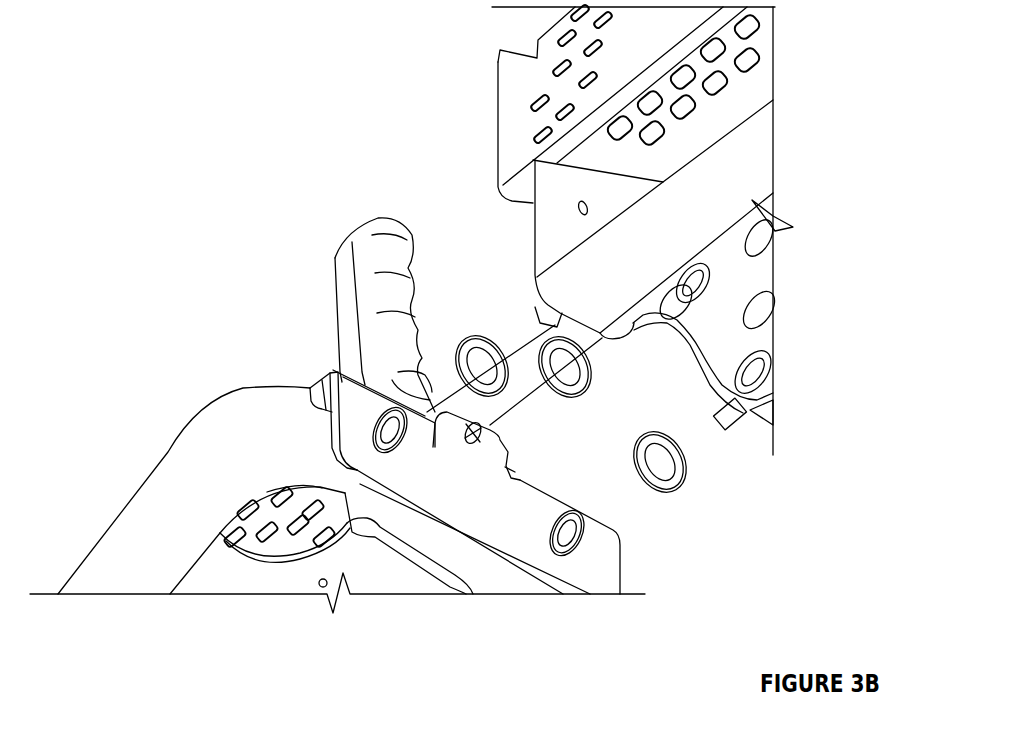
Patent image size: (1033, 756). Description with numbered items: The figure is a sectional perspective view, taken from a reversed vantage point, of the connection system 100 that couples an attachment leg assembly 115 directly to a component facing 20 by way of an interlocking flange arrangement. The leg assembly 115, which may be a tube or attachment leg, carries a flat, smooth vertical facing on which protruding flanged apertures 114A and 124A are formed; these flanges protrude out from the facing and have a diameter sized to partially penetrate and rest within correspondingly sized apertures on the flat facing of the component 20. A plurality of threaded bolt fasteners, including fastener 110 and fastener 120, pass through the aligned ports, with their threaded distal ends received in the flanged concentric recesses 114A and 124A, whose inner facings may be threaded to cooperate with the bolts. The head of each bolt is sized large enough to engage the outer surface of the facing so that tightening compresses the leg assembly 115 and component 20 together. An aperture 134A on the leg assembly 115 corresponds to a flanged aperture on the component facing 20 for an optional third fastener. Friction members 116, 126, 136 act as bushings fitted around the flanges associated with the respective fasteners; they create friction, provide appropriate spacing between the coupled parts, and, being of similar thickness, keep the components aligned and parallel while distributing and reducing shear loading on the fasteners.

The connection system 100 is at (258, 38).
The component facing 20 is at (508, 122).
The fastener 110 is at (767, 383).
The attachment leg assembly 115 is at (173, 505).
The friction member 116 is at (680, 487).
The fastener 120 is at (780, 243).
The flanged aperture 124A is at (437, 447).
The friction member 126 is at (483, 335).
The aperture 134A is at (503, 450).
The friction member 136 is at (593, 397).
The flanged aperture 114A is at (583, 545).